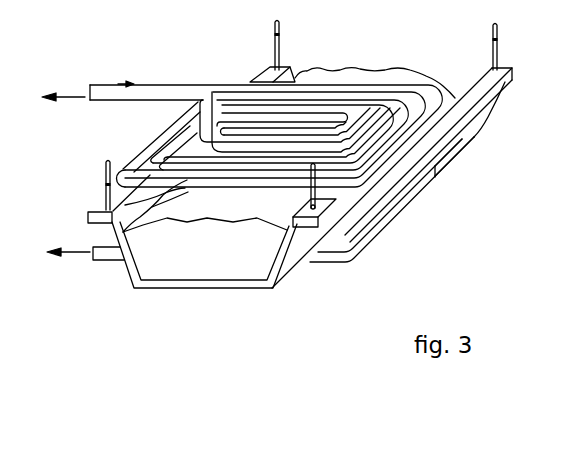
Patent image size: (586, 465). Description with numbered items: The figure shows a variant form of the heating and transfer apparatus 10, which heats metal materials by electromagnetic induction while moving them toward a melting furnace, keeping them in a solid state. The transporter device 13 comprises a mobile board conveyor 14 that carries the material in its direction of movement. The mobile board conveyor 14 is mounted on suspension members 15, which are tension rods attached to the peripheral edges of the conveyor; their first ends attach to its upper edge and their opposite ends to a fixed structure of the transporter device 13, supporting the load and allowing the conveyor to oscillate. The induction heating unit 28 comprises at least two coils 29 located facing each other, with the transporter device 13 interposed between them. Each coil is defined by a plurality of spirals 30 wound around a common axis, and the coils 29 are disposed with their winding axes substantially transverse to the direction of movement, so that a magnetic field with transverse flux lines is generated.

The heating and transfer apparatus 10 is at (481, 145).
The transporter device 13 is at (488, 105).
The mobile board conveyor 14 is at (193, 288).
The suspension members 15 is at (275, 35).
The induction heating unit 28 is at (436, 172).
The coils 29 is at (213, 82).
The spirals 30 is at (325, 86).